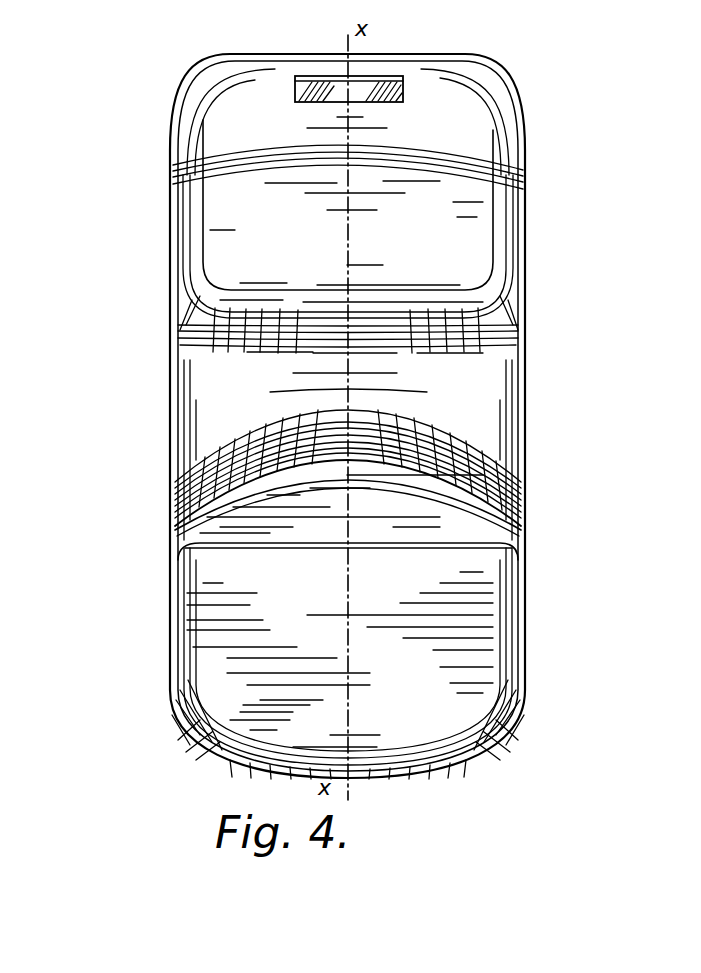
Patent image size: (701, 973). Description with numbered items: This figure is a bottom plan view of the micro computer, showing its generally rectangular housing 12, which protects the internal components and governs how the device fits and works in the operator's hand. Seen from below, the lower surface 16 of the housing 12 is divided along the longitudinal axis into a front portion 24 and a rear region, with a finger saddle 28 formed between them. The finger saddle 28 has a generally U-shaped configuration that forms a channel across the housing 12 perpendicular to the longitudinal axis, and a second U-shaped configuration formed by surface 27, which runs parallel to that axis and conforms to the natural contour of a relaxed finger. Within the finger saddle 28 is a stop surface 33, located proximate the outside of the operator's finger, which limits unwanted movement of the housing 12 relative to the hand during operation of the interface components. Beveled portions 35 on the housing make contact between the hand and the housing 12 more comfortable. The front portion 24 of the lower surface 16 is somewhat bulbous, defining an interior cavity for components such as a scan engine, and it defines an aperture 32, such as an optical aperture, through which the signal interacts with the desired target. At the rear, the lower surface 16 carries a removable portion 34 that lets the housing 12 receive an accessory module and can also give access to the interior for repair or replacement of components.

The housing 12 is at (168, 432).
The lower surface 16 is at (203, 516).
The front portion 24 is at (467, 250).
The surface 27 is at (522, 503).
The finger saddle 28 is at (493, 417).
The aperture 32 is at (323, 80).
The stop surface 33 is at (522, 323).
The removable portion 34 is at (483, 617).
The beveled portions 35 is at (518, 458).